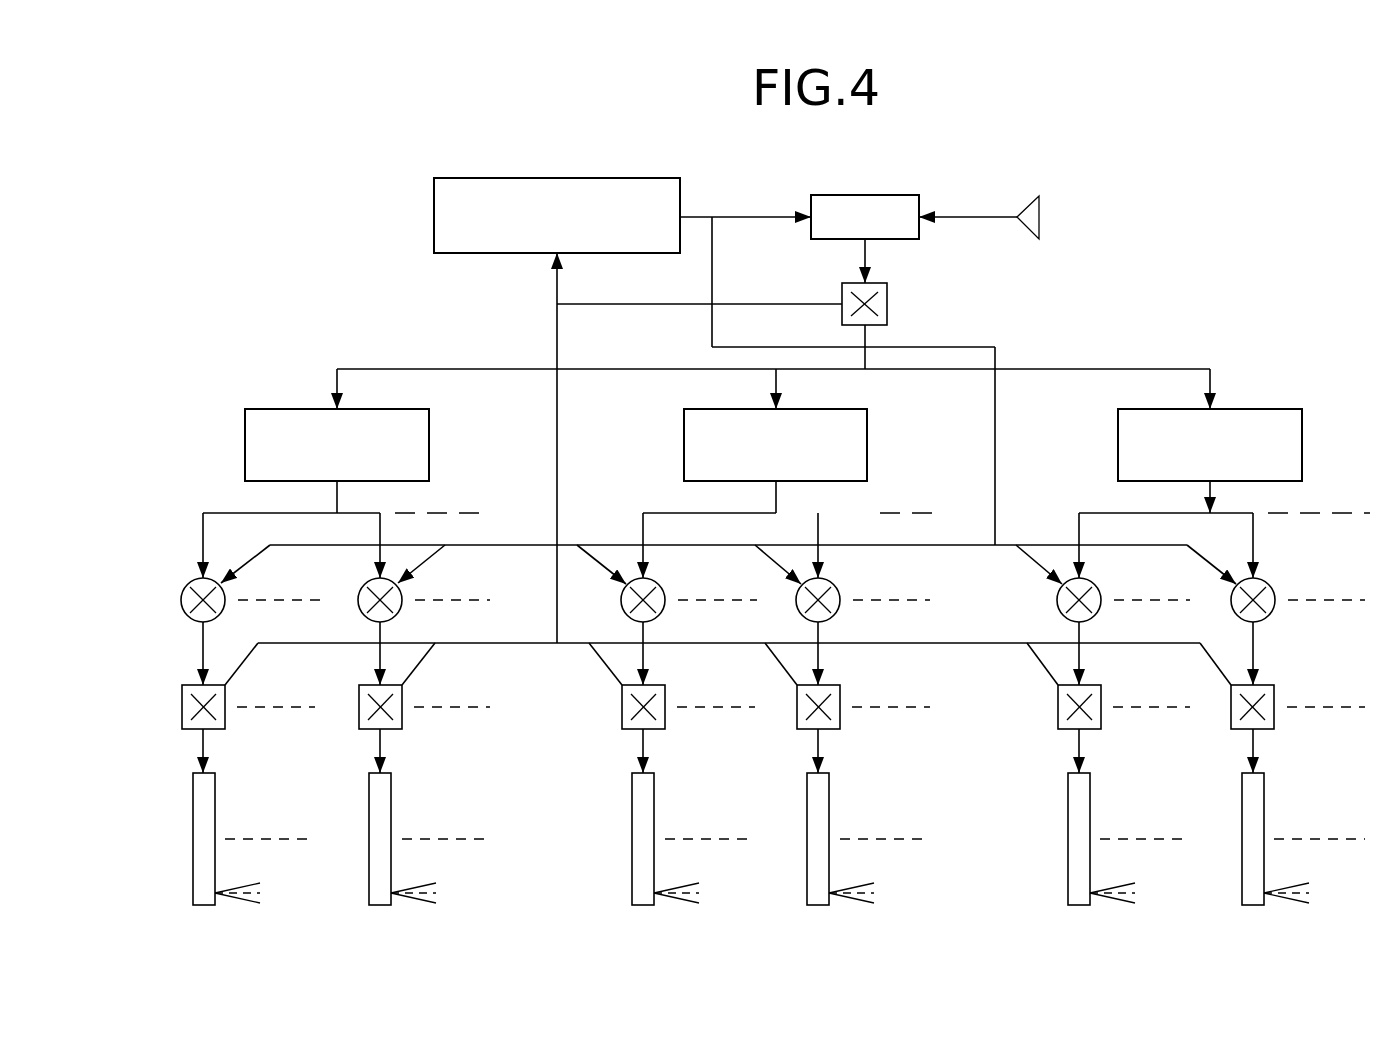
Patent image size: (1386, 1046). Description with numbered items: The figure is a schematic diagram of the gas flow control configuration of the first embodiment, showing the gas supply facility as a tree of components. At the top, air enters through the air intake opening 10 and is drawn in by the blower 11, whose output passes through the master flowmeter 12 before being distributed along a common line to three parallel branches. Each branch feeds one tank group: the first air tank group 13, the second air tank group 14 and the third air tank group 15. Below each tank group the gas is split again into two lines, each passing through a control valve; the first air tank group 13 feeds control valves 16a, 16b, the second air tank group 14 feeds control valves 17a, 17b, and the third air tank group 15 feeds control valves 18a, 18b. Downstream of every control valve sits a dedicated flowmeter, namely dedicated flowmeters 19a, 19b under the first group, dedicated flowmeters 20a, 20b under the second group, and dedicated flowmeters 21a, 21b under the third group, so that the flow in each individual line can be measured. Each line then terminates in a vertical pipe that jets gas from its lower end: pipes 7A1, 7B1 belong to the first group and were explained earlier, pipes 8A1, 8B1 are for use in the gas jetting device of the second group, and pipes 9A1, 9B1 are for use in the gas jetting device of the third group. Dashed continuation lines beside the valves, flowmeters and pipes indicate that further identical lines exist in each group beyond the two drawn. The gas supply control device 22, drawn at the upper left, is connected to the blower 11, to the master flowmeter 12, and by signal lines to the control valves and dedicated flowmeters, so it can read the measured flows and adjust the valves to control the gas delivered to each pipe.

The gas supply control device 22 is at (434, 203).
The blower 11 is at (870, 195).
The air intake opening 10 is at (1039, 217).
The master flowmeter 12 is at (887, 304).
The first air tank group 13 is at (429, 431).
The second air tank group 14 is at (867, 432).
The third air tank group 15 is at (1302, 432).
The control valve 16a is at (221, 611).
The control valve 16b is at (398, 611).
The control valve 17a is at (660, 587).
The control valve 17b is at (835, 587).
The control valve 18a is at (1096, 587).
The control valve 18b is at (1270, 587).
The dedicated flowmeter 19a is at (225, 722).
The dedicated flowmeter 19b is at (402, 722).
The dedicated flowmeter 20a is at (665, 697).
The dedicated flowmeter 20b is at (840, 697).
The dedicated flowmeter 21a is at (1101, 697).
The dedicated flowmeter 21b is at (1274, 697).
The pipe 7A1 is at (215, 797).
The pipe 7B1 is at (391, 797).
The pipe 8A1 is at (632, 828).
The pipe 8B1 is at (807, 828).
The pipe 9A1 is at (1068, 818).
The pipe 9B1 is at (1242, 818).